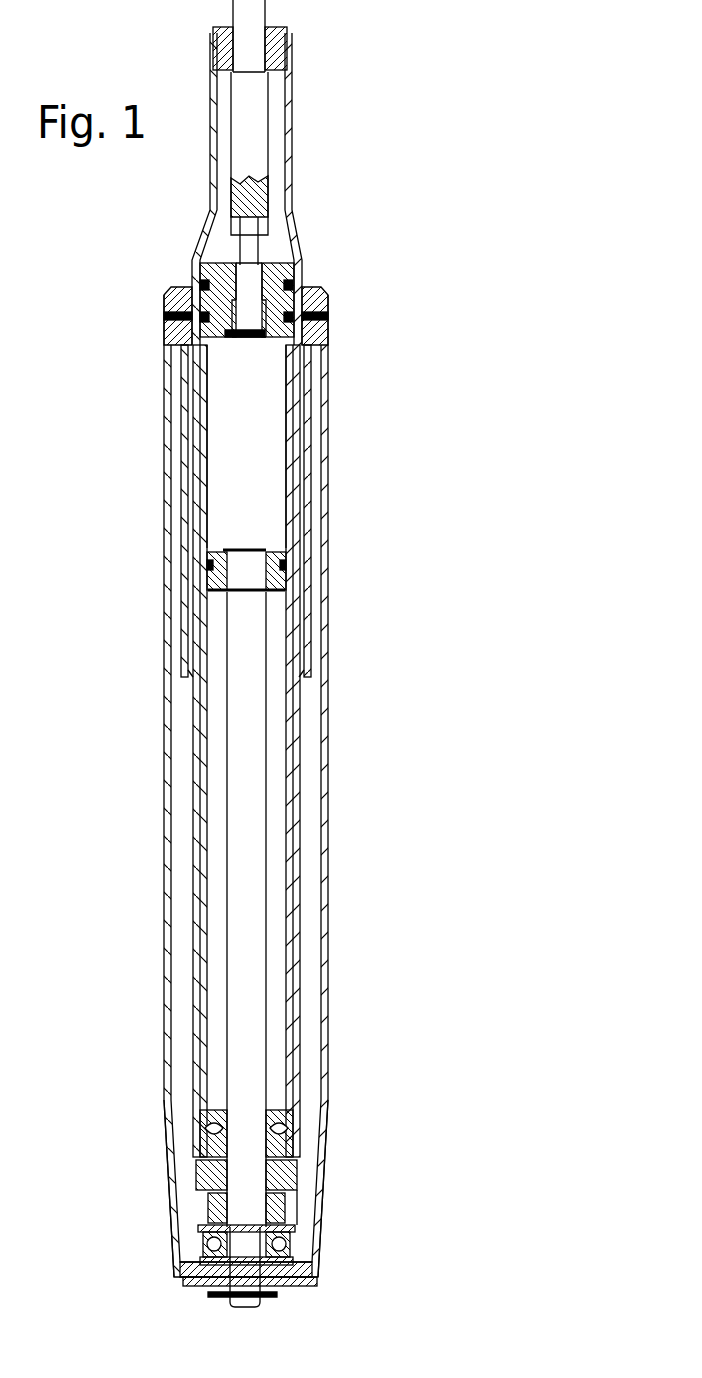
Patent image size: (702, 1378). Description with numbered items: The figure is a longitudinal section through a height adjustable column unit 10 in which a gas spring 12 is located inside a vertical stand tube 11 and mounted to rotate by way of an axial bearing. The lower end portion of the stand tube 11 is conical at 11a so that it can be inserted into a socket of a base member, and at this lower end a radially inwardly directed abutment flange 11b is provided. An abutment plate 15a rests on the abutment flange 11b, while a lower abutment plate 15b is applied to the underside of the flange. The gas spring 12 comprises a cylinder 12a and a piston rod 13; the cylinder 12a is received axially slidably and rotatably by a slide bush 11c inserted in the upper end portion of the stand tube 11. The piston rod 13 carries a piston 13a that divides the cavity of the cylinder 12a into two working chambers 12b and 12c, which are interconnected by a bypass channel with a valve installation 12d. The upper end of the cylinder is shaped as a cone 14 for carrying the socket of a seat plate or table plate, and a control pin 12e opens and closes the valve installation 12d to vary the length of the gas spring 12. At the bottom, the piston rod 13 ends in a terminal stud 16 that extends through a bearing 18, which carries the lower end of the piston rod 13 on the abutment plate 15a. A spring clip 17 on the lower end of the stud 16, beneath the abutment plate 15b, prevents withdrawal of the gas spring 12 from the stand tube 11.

The height adjustable column unit 10 is at (342, 216).
The stand tube 11 is at (323, 830).
The conical lower end portion 11a is at (317, 1227).
The abutment flange 11b is at (185, 1275).
The slide bush 11c is at (325, 322).
The gas spring 12 is at (275, 928).
The cylinder 12a is at (295, 735).
The working chamber 12b is at (272, 431).
The working chamber 12c is at (278, 1027).
The valve installation 12d is at (275, 296).
The control pin 12e is at (258, 122).
The piston rod 13 is at (245, 825).
The piston 13a is at (278, 548).
The cone 14 is at (289, 141).
The abutment plate 15a is at (297, 1260).
The lower abutment plate 15b is at (302, 1288).
The terminal stud 16 is at (245, 1255).
The spring clip 17 is at (213, 1298).
The bearing 18 is at (300, 1228).